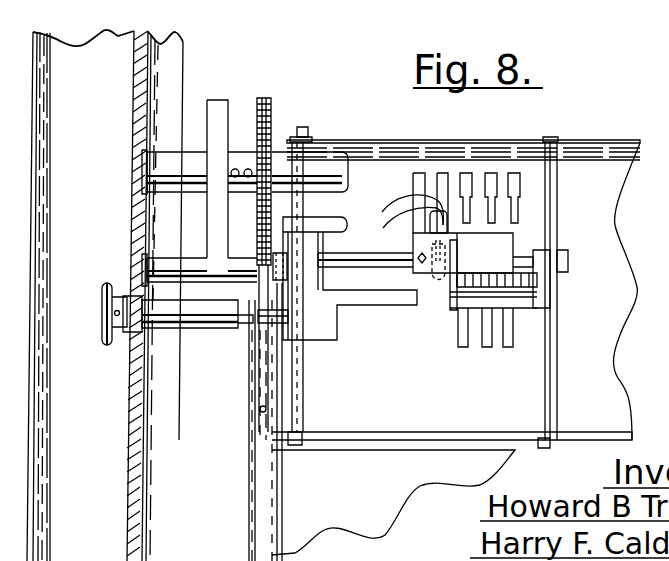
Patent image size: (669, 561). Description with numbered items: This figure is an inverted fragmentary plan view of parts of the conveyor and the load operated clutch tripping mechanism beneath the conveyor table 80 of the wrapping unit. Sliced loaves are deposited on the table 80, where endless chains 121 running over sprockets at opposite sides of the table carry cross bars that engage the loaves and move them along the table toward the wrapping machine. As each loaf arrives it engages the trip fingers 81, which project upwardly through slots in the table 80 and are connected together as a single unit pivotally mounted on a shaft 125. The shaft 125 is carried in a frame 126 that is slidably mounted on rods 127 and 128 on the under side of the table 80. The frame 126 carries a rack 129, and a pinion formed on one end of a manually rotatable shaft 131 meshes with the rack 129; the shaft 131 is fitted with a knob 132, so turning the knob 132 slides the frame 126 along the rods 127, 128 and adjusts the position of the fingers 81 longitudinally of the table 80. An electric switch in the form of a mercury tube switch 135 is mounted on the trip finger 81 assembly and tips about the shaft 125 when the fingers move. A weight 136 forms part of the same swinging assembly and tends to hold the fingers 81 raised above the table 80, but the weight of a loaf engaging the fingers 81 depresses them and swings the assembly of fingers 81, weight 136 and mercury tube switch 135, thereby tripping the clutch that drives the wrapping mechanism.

The conveyor table 80 is at (595, 262).
The trip fingers 81 is at (512, 175).
The endless chains 121 is at (267, 97).
The shaft 125 is at (355, 250).
The frame 126 is at (315, 328).
The rod 127 is at (548, 380).
The rod 128 is at (296, 413).
The rack 129 is at (283, 320).
The manually rotatable shaft 131 is at (247, 325).
The knob 132 is at (107, 310).
The mercury tube switch 135 is at (448, 226).
The weight 136 is at (452, 335).